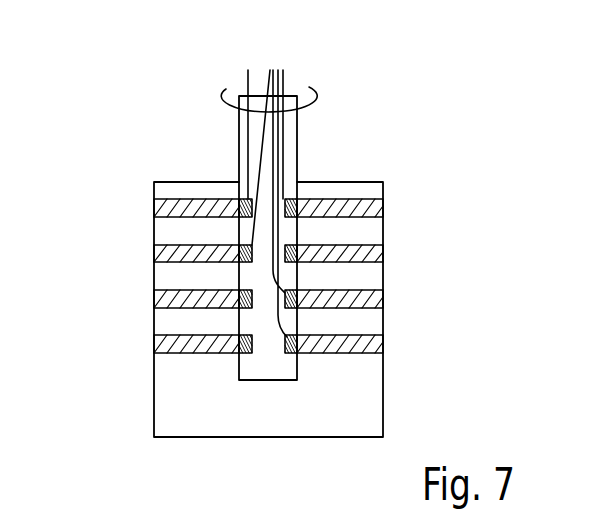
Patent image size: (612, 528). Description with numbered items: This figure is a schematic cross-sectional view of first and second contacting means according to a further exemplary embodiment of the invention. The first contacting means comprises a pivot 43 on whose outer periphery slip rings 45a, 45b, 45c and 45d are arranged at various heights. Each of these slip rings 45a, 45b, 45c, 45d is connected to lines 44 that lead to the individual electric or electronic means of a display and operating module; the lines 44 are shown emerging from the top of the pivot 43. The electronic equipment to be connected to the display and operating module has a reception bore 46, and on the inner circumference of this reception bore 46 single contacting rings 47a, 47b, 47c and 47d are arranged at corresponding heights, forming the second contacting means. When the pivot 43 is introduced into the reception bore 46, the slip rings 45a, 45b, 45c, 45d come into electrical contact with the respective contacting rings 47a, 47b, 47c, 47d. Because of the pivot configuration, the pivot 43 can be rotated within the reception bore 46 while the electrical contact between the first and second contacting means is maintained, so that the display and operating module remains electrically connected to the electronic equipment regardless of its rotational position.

The pivot 43 is at (298, 153).
The lines 44 is at (270, 77).
The reception bore 46 is at (338, 190).
The slip ring 45a is at (240, 213).
The slip ring 45b is at (243, 258).
The slip ring 45c is at (240, 306).
The slip ring 45d is at (241, 352).
The contacting ring 47a is at (363, 204).
The contacting ring 47b is at (367, 249).
The contacting ring 47c is at (367, 290).
The contacting ring 47d is at (367, 340).